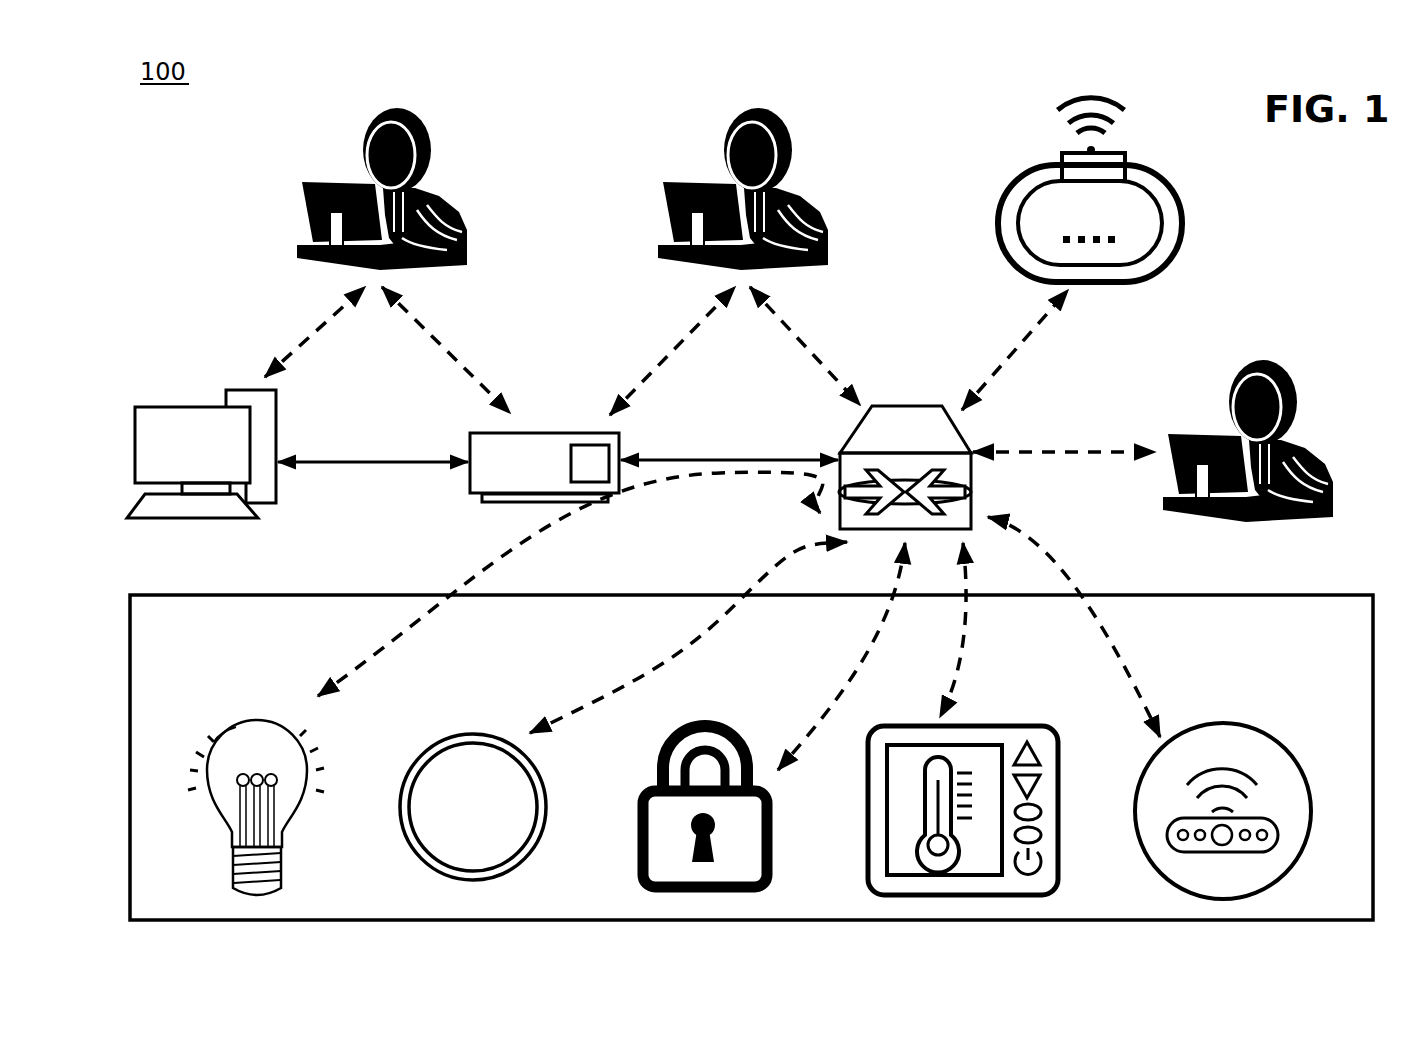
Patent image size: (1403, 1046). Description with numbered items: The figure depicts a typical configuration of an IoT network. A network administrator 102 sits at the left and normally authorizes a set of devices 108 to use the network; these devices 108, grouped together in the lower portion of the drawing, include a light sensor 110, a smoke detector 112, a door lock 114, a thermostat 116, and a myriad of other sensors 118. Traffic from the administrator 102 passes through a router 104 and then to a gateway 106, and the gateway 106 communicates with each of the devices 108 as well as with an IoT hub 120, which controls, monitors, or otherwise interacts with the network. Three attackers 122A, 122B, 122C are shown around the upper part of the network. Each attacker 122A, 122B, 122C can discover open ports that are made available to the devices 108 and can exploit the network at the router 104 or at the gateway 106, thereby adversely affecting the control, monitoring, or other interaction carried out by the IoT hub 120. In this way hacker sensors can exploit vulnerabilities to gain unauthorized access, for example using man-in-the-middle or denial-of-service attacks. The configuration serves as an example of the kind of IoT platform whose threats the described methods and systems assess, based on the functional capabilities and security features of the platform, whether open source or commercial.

The network administrator 102 is at (210, 407).
The router 104 is at (555, 435).
The gateway 106 is at (922, 405).
The devices 108 is at (710, 593).
The light sensor 110 is at (287, 703).
The smoke detector 112 is at (498, 733).
The door lock 114 is at (753, 757).
The thermostat 116 is at (992, 705).
The other sensors 118 is at (1250, 722).
The IoT hub 120 is at (1111, 90).
The attacker 122A is at (382, 170).
The attacker 122B is at (743, 170).
The attacker 122C is at (1248, 422).